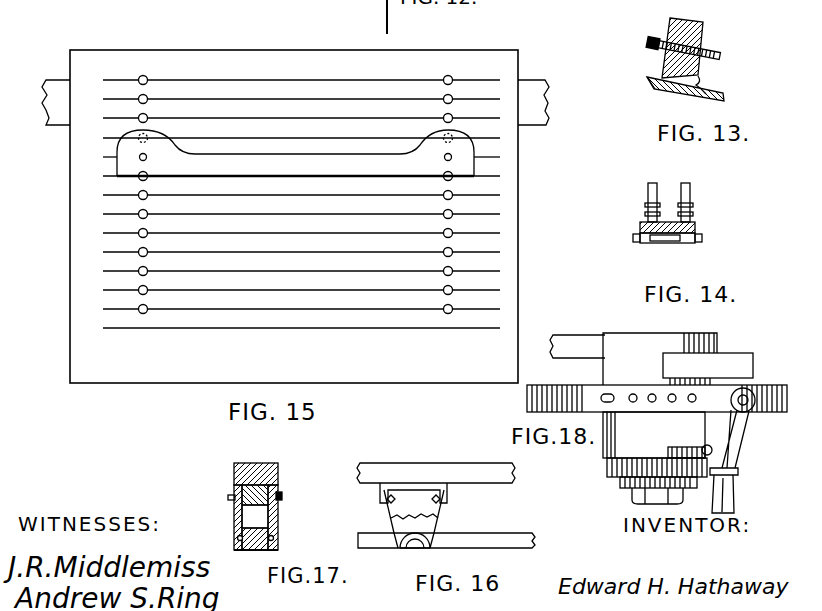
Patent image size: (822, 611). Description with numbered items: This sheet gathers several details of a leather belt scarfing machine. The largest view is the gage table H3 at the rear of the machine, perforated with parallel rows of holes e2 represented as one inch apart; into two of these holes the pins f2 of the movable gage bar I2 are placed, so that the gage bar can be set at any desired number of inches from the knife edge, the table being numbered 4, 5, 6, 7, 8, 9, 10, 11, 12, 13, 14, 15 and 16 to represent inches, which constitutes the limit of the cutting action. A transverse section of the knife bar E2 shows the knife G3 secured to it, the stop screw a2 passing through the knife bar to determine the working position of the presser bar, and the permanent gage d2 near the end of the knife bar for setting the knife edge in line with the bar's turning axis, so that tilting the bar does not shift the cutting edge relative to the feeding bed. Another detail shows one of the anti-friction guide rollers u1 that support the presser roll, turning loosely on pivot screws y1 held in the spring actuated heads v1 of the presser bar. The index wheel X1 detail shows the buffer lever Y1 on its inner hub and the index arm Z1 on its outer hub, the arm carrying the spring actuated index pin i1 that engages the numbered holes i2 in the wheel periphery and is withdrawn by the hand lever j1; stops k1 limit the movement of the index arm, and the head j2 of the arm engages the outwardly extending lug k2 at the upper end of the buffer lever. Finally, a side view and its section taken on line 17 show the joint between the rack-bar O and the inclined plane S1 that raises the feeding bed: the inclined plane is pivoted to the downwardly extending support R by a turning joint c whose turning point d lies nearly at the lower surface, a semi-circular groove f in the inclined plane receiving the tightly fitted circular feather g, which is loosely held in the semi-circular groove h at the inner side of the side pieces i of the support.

In FIG. 15, the gage table H3 is at (276, 58).
In FIG. 15, the holes e2 is at (144, 76).
In FIG. 15, the movable gage bar I2 is at (292, 167).
In FIG. 15, the pins f2 is at (147, 157).
In FIG. 15, the inch numbering 4 is at (307, 328).
In FIG. 15, the inch numbering 5 is at (307, 309).
In FIG. 15, the inch numbering 6 is at (307, 290).
In FIG. 15, the inch numbering 7 is at (307, 271).
In FIG. 15, the inch numbering 8 is at (307, 252).
In FIG. 15, the inch numbering 9 is at (307, 233).
In FIG. 15, the inch numbering 10 is at (309, 214).
In FIG. 15, the inch numbering 11 is at (309, 195).
In FIG. 15, the inch numbering 12 is at (309, 176).
In FIG. 15, the inch numbering 13 is at (309, 157).
In FIG. 15, the inch numbering 14 is at (309, 138).
In FIG. 15, the inch numbering 15 is at (309, 118).
In FIG. 15, the inch numbering 16 is at (309, 99).
In FIG. 13, the knife bar E2 is at (672, 28).
In FIG. 13, the stop screw a2 is at (711, 53).
In FIG. 13, the permanent gage d2 is at (716, 92).
In FIG. 13, the knife G3 is at (650, 82).
In FIG. 14, the spring actuated heads v1 is at (668, 222).
In FIG. 14, the anti-friction guide rollers u1 is at (692, 226).
In FIG. 14, the pivot screws y1 is at (635, 237).
In FIG. 18, the buffer lever Y1 is at (578, 346).
In FIG. 18, the index wheel X1 is at (642, 388).
In FIG. 18, the outwardly extending lug k2 is at (752, 391).
In FIG. 18, the stops k1 is at (603, 396).
In FIG. 18, the holes i2 is at (652, 403).
In FIG. 18, the index arm Z1 is at (693, 428).
In FIG. 18, the index pin i1 is at (750, 408).
In FIG. 18, the head j2 is at (720, 396).
In FIG. 18, the hand lever j1 is at (724, 490).
In FIG. 17, the rack-bar O is at (234, 471).
In FIG. 16, the rack-bar O is at (451, 477).
In FIG. 17, the support R is at (280, 497).
In FIG. 16, the support R is at (418, 505).
In FIG. 17, the side pieces i is at (236, 512).
In FIG. 17, the semi-circular groove f is at (255, 517).
In FIG. 16, the semi-circular groove f is at (434, 548).
In FIG. 17, the turning joint c is at (278, 530).
In FIG. 17, the semi-circular groove h is at (237, 538).
In FIG. 17, the circular feather g is at (237, 543).
In FIG. 16, the circular feather g is at (428, 541).
In FIG. 17, the turning point d is at (258, 551).
In FIG. 16, the turning point d is at (415, 552).
In FIG. 16, the section line 17 is at (424, 445).
In FIG. 16, the inclined plane S1 is at (446, 529).